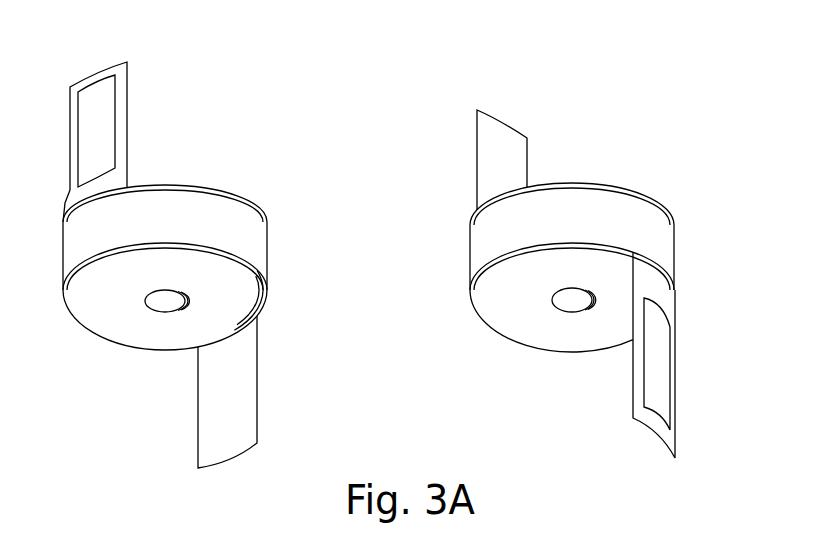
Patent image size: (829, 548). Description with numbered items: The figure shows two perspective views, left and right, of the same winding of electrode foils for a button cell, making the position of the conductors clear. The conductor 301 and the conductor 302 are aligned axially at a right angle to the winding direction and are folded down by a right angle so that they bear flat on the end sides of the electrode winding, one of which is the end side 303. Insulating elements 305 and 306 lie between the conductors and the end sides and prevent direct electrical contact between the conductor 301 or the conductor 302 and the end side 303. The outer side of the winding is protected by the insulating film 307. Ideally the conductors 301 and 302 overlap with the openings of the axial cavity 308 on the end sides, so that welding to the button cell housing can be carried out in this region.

The conductor 301 is at (100, 123).
The conductor 302 is at (657, 387).
The end side 303 is at (98, 305).
The insulating element 305 is at (238, 408).
The insulating element 306 is at (93, 75).
The insulating film 307 is at (230, 227).
The axial cavity 308 is at (165, 302).